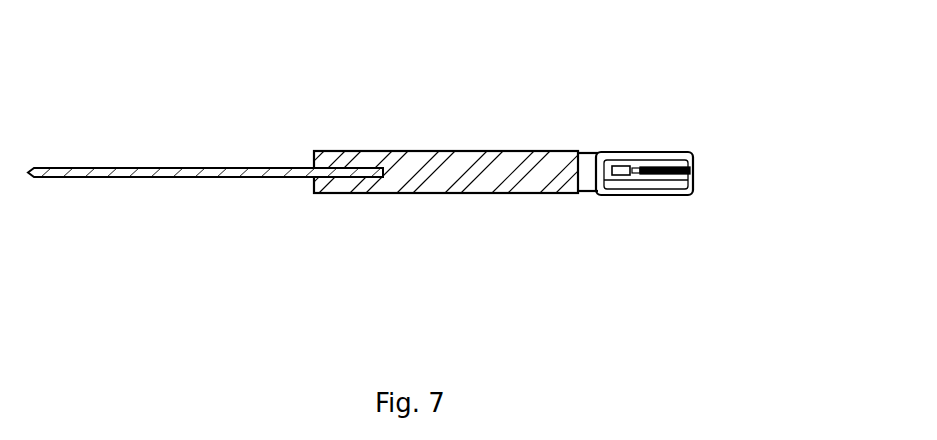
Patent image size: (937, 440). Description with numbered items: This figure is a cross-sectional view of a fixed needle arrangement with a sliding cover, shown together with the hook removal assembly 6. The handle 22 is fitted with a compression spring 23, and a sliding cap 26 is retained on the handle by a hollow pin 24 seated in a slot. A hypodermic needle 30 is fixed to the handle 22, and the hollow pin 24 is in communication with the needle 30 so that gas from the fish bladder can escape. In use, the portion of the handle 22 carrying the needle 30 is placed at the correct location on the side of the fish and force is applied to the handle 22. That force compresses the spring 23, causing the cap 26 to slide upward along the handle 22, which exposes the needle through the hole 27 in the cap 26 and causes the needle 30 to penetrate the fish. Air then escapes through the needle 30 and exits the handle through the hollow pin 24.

The hook removal assembly 6 is at (167, 172).
The handle 22 is at (450, 165).
The compression spring 23 is at (608, 182).
The hollow pin 24 is at (625, 168).
The sliding cap 26 is at (651, 152).
The hole 27 is at (693, 169).
The hypodermic needle 30 is at (682, 168).